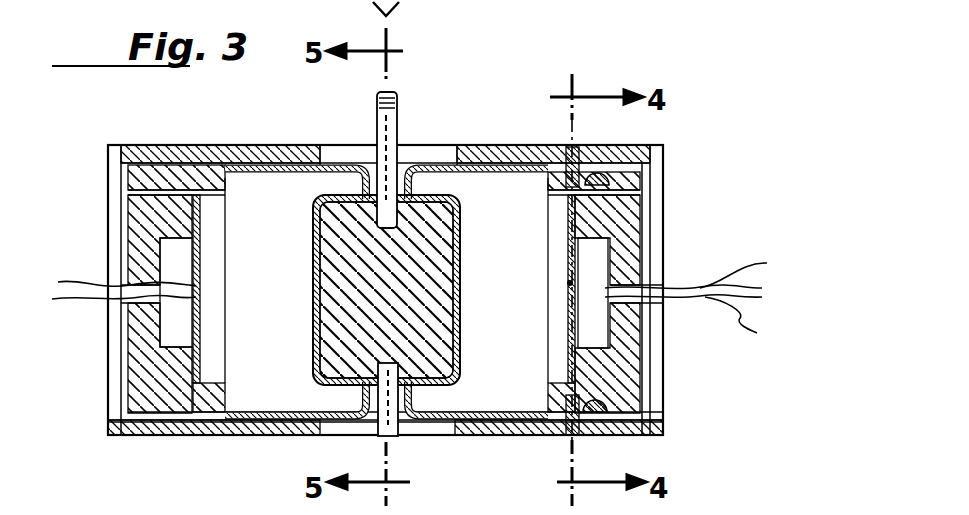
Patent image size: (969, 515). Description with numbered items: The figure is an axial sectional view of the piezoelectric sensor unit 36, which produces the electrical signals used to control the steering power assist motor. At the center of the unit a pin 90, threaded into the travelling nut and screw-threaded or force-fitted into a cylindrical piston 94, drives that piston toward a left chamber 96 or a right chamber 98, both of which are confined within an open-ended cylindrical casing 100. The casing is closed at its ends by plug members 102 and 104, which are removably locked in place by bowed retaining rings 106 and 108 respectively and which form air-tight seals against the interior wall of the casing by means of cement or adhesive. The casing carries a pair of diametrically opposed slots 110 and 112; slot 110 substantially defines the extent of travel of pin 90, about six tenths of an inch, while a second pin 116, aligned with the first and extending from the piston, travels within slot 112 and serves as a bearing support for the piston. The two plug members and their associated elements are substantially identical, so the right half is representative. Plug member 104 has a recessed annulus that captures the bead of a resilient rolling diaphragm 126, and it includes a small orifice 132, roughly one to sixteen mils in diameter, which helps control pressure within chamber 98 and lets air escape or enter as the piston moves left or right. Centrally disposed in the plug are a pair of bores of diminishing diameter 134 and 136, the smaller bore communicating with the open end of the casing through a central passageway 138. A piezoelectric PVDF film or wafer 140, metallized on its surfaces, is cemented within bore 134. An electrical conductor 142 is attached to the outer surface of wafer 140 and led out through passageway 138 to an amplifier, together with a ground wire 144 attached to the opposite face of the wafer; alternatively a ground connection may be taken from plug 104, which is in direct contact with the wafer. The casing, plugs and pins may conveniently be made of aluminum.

The piezoelectric sensor unit 36 is at (136, 446).
The pin 90 is at (398, 125).
The cylindrical piston 94 is at (370, 302).
The left chamber 96 is at (283, 283).
The right chamber 98 is at (528, 263).
The cylindrical casing 100 is at (232, 147).
The plug member 102 is at (162, 207).
The plug member 104 is at (620, 227).
The bowed retaining ring 106 is at (120, 353).
The bowed retaining ring 108 is at (646, 253).
The slot 110 is at (356, 148).
The slot 112 is at (353, 425).
The pin 116 is at (400, 430).
The rolling diaphragm 126 is at (462, 226).
The orifice 132 is at (644, 183).
The bore 134 is at (552, 378).
The bore 136 is at (565, 336).
The central passageway 138 is at (667, 275).
The PVDF wafer 140 is at (568, 283).
The electrical conductor 142 is at (743, 258).
The ground wire 144 is at (745, 323).